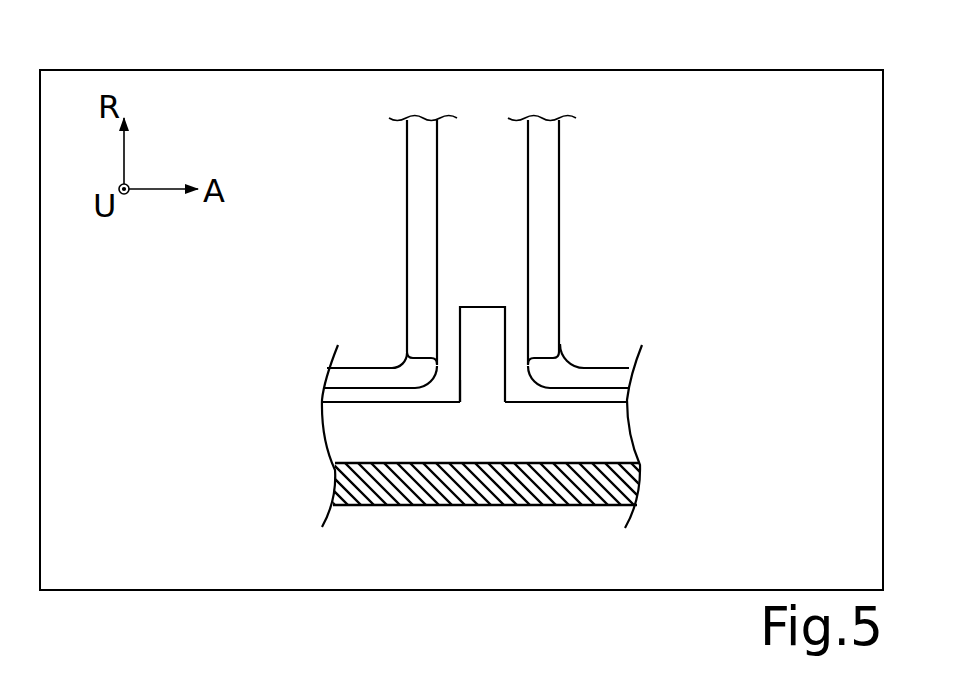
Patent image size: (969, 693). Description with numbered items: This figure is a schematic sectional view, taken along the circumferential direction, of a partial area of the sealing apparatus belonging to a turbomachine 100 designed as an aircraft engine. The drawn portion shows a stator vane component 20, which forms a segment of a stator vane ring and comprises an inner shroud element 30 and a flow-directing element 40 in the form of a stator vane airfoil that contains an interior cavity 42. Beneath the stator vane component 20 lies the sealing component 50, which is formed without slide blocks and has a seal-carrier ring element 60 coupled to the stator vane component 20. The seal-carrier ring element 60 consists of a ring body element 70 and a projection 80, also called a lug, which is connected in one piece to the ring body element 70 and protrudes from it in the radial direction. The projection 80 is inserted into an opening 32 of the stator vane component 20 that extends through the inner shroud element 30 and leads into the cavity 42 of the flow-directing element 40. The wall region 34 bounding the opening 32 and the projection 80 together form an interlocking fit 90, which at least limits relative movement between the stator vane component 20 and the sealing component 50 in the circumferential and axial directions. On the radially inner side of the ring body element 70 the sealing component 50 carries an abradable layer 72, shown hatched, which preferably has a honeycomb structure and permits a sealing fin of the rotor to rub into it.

The turbomachine 100 is at (750, 69).
The stator vane component 20 is at (514, 241).
The inner shroud element 30 is at (492, 410).
The opening 32 is at (446, 373).
The wall region 34 is at (448, 330).
The flow-directing element 40 is at (542, 233).
The cavity 42 is at (467, 210).
The sealing component 50 is at (490, 508).
The seal-carrier ring element 60 is at (322, 436).
The ring body element 70 is at (598, 433).
The abradable layer 72 is at (622, 487).
The projection 80 is at (493, 333).
The interlocking fit 90 is at (482, 305).